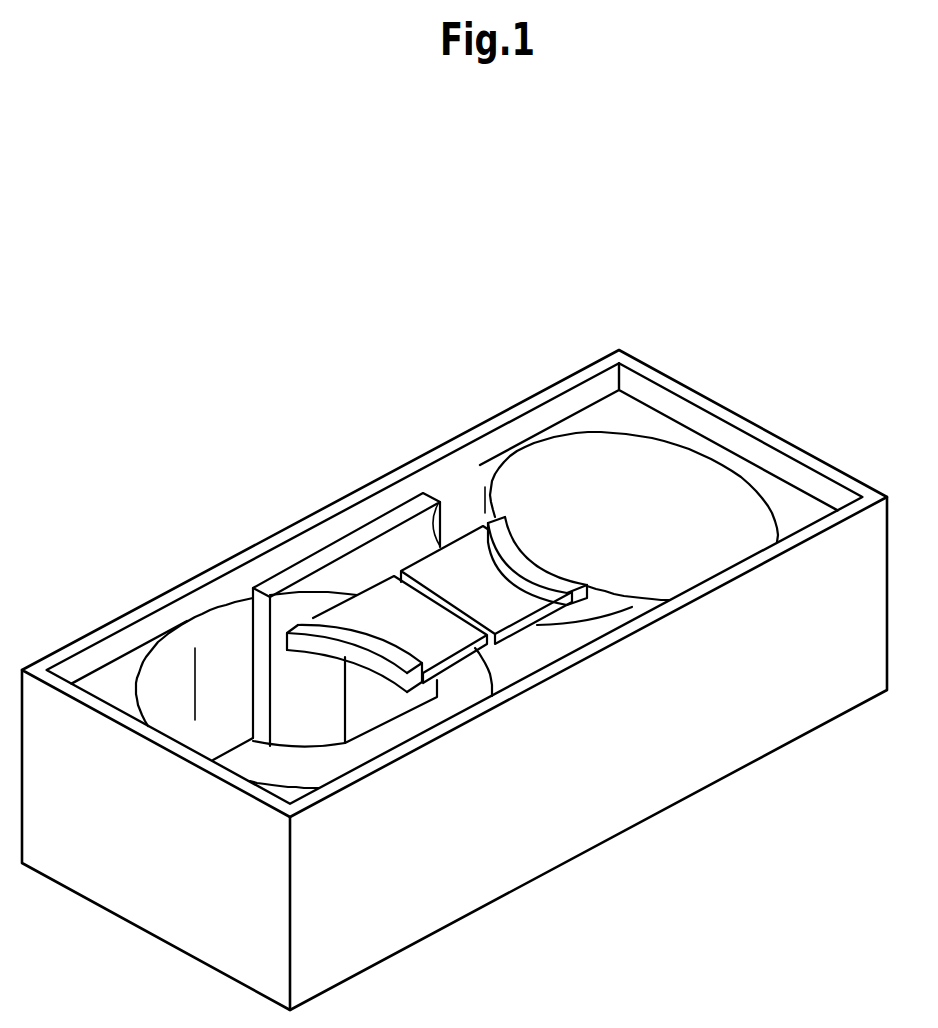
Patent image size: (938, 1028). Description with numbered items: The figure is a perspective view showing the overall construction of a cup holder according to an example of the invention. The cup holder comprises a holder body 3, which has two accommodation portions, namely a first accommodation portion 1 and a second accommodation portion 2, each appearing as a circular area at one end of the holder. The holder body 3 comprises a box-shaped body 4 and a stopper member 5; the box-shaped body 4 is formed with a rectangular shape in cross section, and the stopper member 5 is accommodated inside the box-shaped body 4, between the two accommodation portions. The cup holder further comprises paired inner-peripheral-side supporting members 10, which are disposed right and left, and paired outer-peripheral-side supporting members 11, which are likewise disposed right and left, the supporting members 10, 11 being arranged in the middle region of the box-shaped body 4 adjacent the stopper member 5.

The first accommodation portion 1 is at (213, 713).
The second accommodation portion 2 is at (640, 547).
The holder body 3 is at (758, 415).
The box-shaped body 4 is at (655, 373).
The stopper member 5 is at (350, 530).
The inner-peripheral-side supporting member 10 is at (290, 631).
The outer-peripheral-side supporting member 11 is at (374, 602).